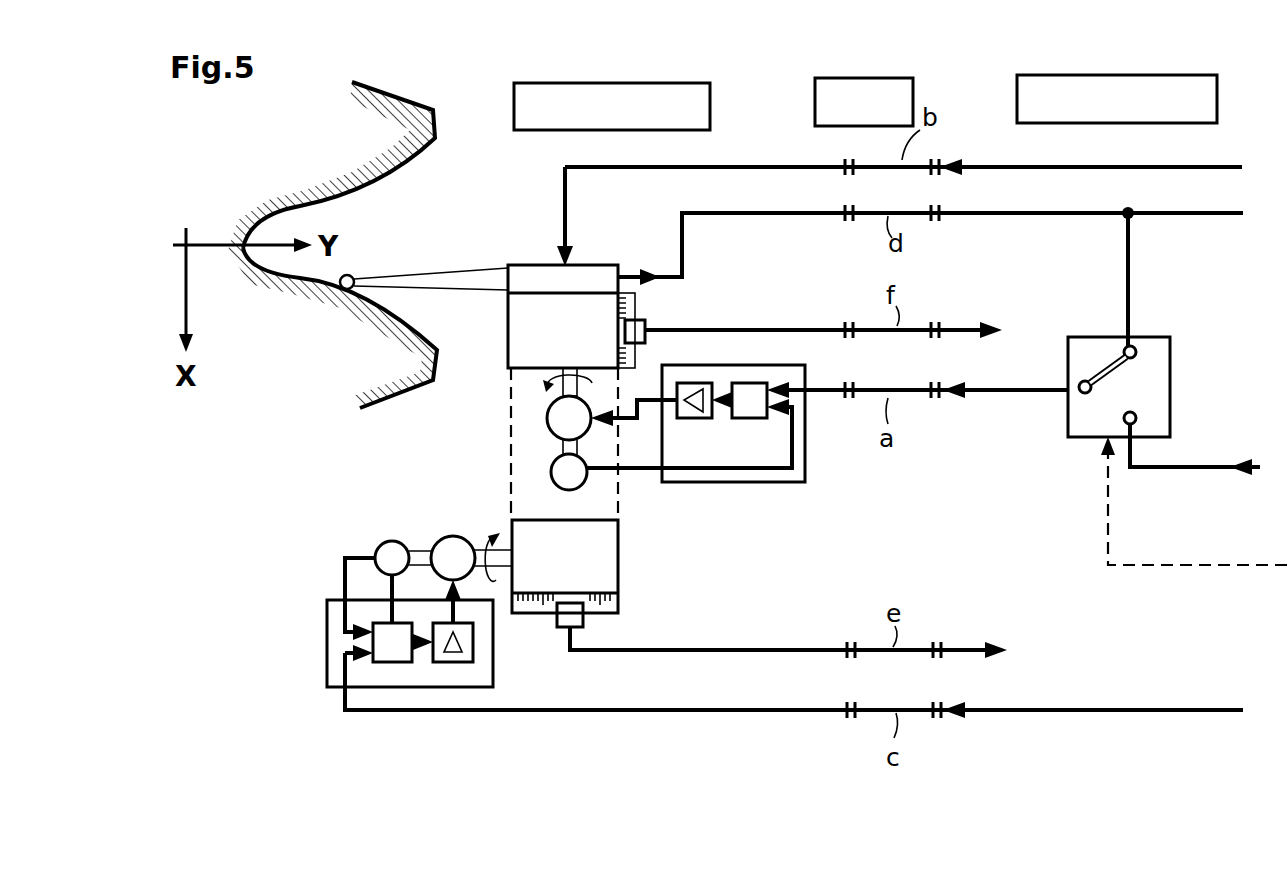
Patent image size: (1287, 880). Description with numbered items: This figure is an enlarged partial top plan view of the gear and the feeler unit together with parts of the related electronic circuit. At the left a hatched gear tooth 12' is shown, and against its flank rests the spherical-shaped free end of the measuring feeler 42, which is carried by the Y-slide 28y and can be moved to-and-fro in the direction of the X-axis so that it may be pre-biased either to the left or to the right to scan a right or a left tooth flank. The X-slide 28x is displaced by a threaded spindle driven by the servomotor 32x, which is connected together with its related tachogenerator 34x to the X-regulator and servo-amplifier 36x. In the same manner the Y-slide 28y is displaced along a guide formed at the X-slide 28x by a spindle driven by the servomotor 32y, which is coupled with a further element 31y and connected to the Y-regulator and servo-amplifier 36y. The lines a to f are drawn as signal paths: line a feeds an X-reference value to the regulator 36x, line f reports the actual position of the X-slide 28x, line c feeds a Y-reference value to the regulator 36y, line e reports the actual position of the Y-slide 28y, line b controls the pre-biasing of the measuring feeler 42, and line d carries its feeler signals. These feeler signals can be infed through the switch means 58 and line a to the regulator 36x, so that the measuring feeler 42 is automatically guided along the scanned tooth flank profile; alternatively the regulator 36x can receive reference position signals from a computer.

The gear tooth 12' is at (339, 146).
The measuring feeler 42 is at (448, 276).
The X-slide 28x is at (516, 328).
The servomotor 32x is at (546, 418).
The tachogenerator 34x is at (552, 470).
The X-regulator and servo-amplifier 36x is at (768, 482).
The switch means 58 is at (1160, 385).
The Y-slide 28y is at (618, 538).
The y-direction position encoder 31y is at (392, 541).
The servomotor 32y is at (455, 536).
The Y-regulator and servo-amplifier 36y is at (333, 650).